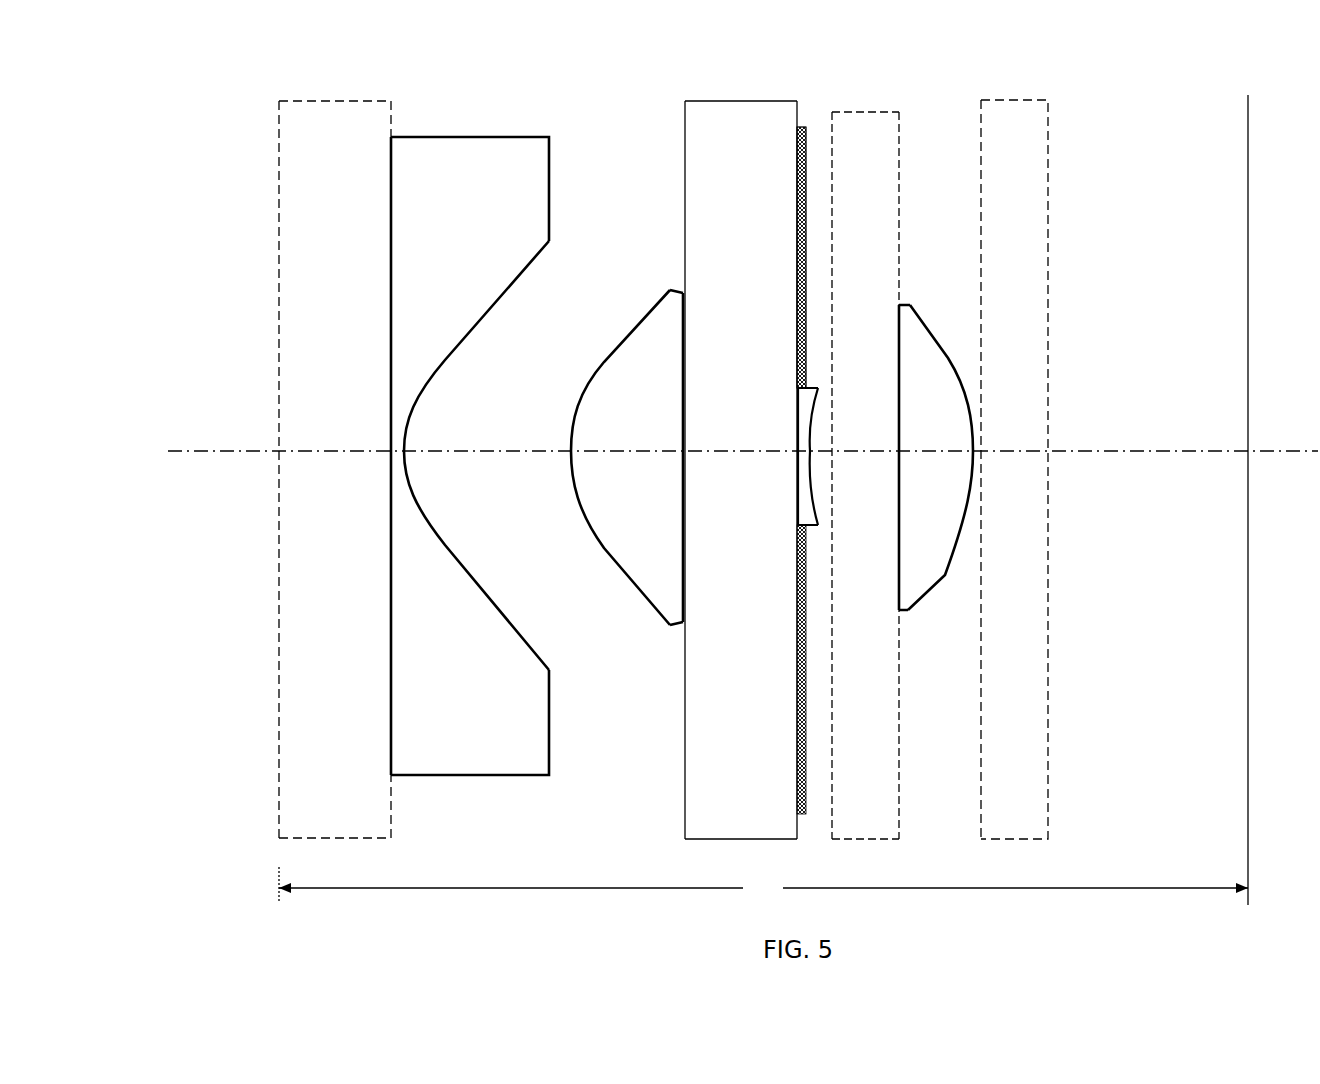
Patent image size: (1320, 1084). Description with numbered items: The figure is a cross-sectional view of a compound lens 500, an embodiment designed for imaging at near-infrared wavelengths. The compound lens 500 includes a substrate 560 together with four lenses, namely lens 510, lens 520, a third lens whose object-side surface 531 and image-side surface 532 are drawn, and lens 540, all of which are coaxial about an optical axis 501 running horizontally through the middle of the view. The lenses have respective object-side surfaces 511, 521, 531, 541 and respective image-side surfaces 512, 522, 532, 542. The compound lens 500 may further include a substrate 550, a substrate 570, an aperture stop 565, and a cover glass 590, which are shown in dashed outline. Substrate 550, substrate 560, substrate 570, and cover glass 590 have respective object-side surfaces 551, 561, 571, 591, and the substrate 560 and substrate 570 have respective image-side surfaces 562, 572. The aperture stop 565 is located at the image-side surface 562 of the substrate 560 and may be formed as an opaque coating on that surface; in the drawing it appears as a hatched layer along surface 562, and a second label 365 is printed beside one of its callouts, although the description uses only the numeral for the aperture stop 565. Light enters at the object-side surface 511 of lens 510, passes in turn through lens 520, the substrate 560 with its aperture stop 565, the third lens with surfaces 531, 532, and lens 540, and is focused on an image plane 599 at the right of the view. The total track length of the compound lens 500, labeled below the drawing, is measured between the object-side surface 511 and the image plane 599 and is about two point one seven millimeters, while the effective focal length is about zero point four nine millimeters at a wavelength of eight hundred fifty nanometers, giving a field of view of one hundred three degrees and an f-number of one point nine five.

The compound lens 500 is at (195, 84).
The optical axis 501 is at (176, 451).
The lens 510 is at (431, 456).
The object-side surface 511 is at (391, 197).
The image-side surface 512 is at (422, 513).
The lens 520 is at (633, 441).
The object-side surface 521 is at (571, 441).
The image-side surface 522 is at (684, 310).
The object-side surface 531 is at (797, 415).
The image-side surface 532 is at (820, 418).
The lens 540 is at (927, 468).
The object-side surface 541 is at (899, 322).
The image-side surface 542 is at (941, 578).
The substrate 550 is at (294, 469).
The object-side surface 551 is at (279, 140).
The substrate 560 is at (719, 446).
The object-side surface 561 is at (685, 107).
The image-side surface 562 is at (798, 107).
The aperture stop 565 is at (797, 236).
The aperture stop layer 365 is at (747, 257).
The substrate 570 is at (875, 472).
The object-side surface 571 is at (832, 826).
The image-side surface 572 is at (899, 122).
The cover glass 590 is at (993, 450).
The object-side surface 591 is at (981, 142).
The image plane 599 is at (1248, 125).